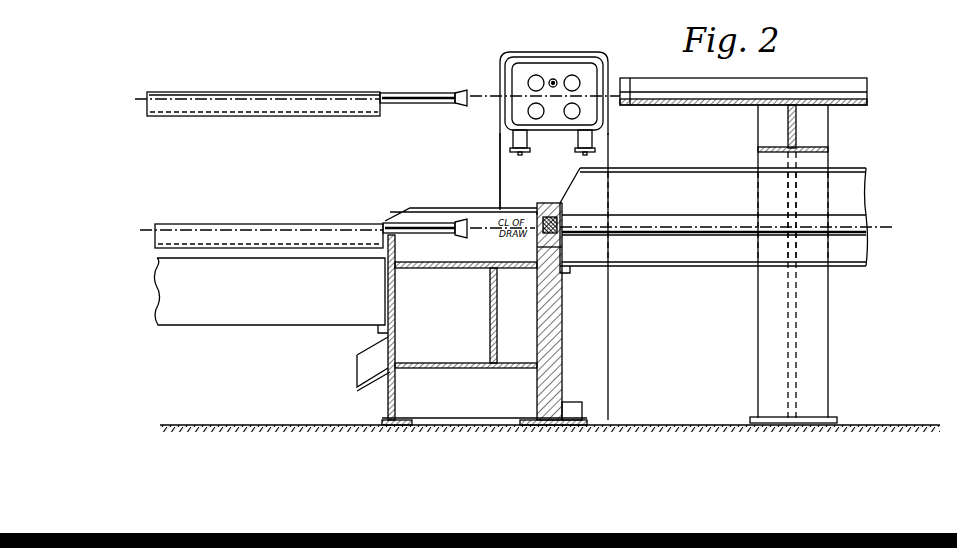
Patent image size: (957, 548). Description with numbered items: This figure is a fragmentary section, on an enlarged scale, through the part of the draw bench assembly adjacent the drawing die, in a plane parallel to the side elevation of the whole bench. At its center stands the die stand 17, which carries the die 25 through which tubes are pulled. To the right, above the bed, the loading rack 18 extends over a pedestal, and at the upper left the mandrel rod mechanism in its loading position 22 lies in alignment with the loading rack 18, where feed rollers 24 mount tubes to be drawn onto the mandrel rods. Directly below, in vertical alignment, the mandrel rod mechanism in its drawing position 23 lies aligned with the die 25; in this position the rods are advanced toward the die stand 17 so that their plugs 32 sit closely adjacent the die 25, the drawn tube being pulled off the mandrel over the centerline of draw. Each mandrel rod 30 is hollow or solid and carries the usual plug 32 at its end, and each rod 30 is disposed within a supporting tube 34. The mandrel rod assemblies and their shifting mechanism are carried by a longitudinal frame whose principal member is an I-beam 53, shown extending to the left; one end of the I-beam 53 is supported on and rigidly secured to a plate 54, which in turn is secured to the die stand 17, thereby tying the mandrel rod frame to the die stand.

The die stand 17 is at (558, 360).
The loading rack 18 is at (807, 84).
The mandrel rod mechanism in loading position 22 is at (295, 95).
The mandrel rod mechanism in drawing position 23 is at (258, 200).
The feed rollers 24 is at (550, 76).
The die 25 is at (556, 224).
The mandrel rod 30 is at (395, 93).
The plug 32 is at (460, 89).
The supporting tube 34 is at (205, 103).
The I-beam 53 is at (271, 303).
The plate 54 is at (390, 330).